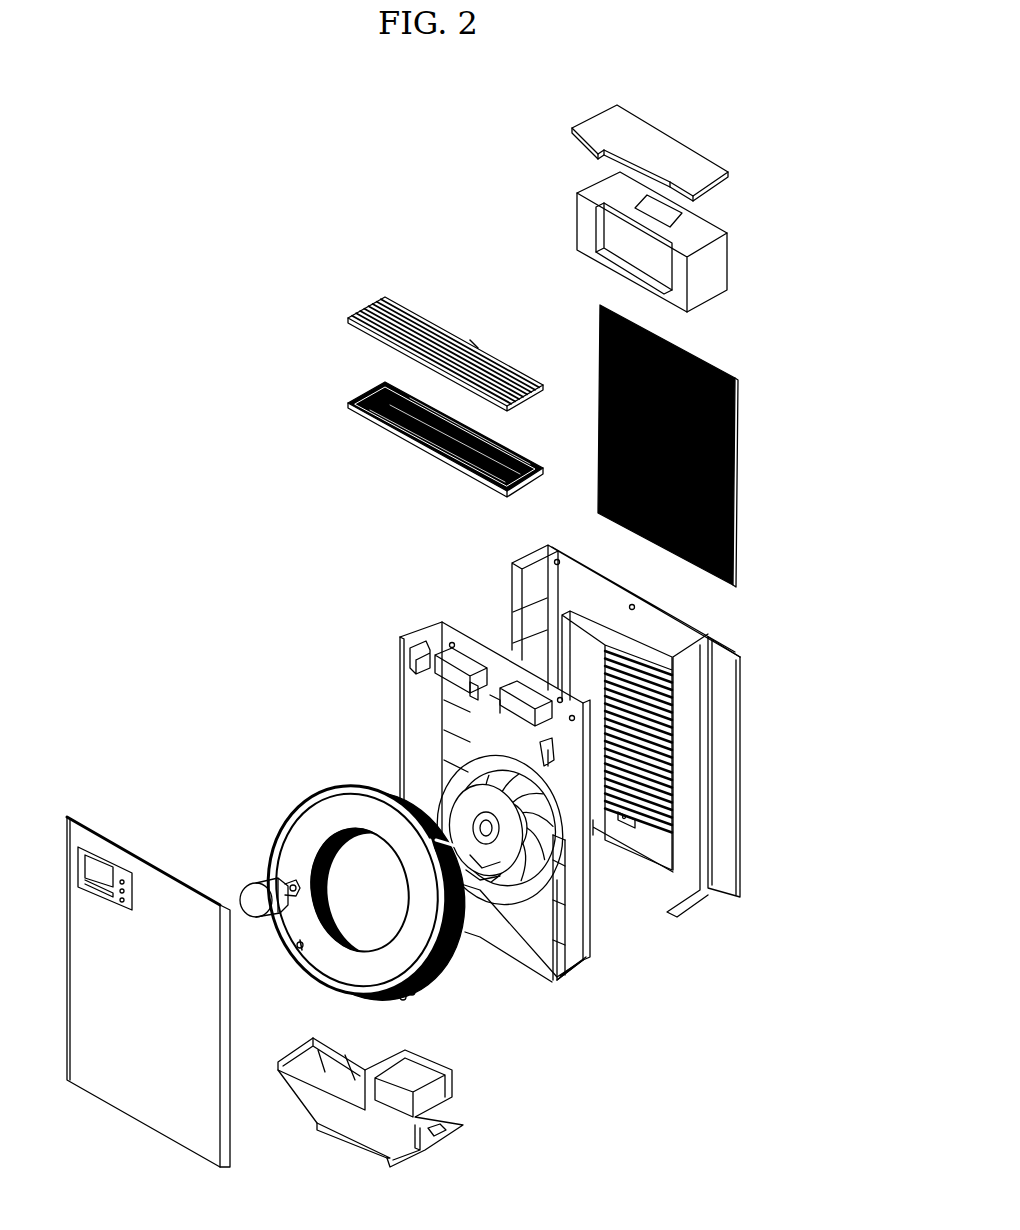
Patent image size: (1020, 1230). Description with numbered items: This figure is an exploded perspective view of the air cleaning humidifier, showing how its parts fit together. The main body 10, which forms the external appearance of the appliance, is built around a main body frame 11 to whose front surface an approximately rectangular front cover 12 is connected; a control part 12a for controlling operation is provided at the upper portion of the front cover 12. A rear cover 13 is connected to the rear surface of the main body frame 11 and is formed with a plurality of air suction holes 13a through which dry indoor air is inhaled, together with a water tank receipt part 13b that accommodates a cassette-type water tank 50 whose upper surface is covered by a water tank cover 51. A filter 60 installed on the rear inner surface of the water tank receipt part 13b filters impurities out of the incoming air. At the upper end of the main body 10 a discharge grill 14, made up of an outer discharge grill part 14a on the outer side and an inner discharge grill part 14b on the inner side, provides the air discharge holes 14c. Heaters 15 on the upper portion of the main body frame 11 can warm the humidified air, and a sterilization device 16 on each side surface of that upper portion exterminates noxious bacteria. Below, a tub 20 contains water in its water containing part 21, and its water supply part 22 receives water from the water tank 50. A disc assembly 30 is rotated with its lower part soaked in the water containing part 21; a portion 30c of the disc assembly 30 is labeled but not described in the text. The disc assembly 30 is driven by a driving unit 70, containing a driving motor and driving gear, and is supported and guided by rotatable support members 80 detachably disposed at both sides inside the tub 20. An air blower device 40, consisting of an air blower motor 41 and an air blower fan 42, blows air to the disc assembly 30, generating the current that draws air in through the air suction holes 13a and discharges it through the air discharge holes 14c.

The main body 10 is at (370, 626).
The main body frame 11 is at (575, 972).
The front cover 12 is at (148, 986).
The control part 12a is at (95, 860).
The rear cover 13 is at (738, 714).
The air suction holes 13a is at (672, 785).
The water tank receipt part 13b is at (728, 870).
The discharge grill 14 is at (462, 374).
The outer discharge grill part 14a is at (400, 300).
The inner discharge grill part 14b is at (520, 458).
The air discharge holes 14c is at (415, 393).
The heaters 15 is at (520, 690).
The sterilization device 16 is at (428, 655).
The tub 20 is at (398, 1117).
The water containing part 21 is at (450, 1133).
The water supply part 22 is at (440, 1072).
The disc assembly 30 is at (356, 893).
The ring mounting portion 30c is at (440, 968).
The air blower device 40 is at (458, 790).
The air blower motor 41 is at (468, 812).
The air blower fan 42 is at (550, 895).
The water tank 50 is at (710, 273).
The water tank cover 51 is at (660, 128).
The filter 60 is at (735, 545).
The driving unit 70 is at (262, 918).
The support members 80 is at (400, 998).